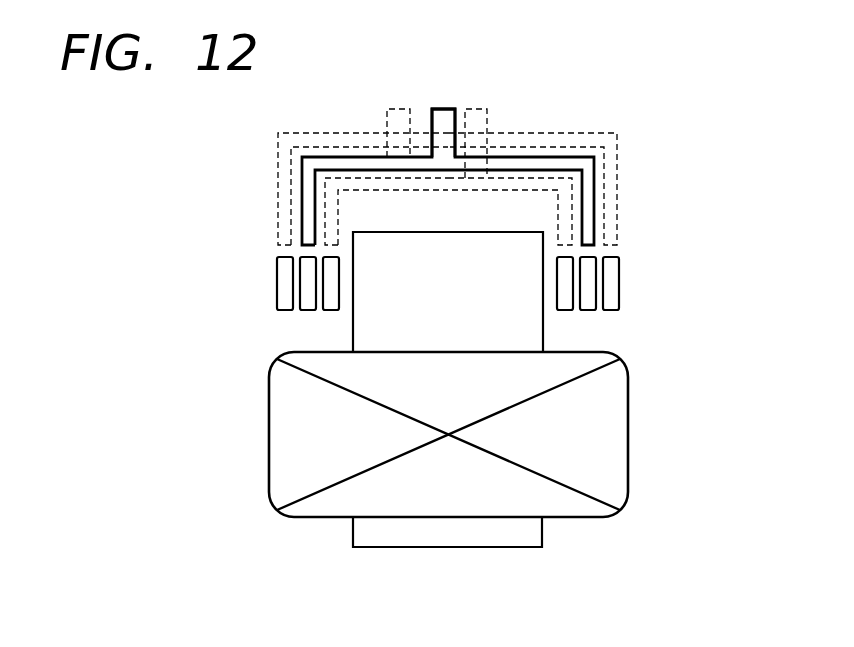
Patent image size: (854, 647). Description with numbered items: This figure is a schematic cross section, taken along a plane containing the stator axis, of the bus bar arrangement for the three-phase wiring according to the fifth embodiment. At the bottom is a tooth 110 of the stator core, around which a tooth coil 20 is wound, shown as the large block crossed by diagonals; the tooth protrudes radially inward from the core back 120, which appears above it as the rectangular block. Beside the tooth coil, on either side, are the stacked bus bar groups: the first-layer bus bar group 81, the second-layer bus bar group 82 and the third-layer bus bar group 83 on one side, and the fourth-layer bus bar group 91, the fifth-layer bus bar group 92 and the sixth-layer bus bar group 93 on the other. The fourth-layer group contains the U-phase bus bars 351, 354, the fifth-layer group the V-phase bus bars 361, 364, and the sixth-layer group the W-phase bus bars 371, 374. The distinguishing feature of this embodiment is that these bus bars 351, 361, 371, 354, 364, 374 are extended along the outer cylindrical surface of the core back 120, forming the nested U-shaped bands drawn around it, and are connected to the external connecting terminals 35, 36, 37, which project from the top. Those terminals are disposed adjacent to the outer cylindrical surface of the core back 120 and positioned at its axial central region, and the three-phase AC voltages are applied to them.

The tooth coil 20 is at (328, 505).
The tooth 110 is at (502, 541).
The core back 120 is at (388, 243).
The external connecting terminal 35 is at (397, 108).
The external connecting terminal 36 is at (437, 108).
The external connecting terminal 37 is at (475, 108).
The bus bar 351 is at (278, 152).
The bus bar 354 is at (618, 142).
The bus bar 361 is at (305, 193).
The bus bar 364 is at (590, 188).
The bus bar 371 is at (325, 226).
The bus bar 374 is at (572, 232).
The first-layer bus bar group 81 is at (285, 310).
The second-layer bus bar group 82 is at (308, 310).
The third-layer bus bar group 83 is at (331, 310).
The fourth-layer bus bar group 91 is at (565, 310).
The fifth-layer bus bar group 92 is at (588, 310).
The sixth-layer bus bar group 93 is at (610, 310).